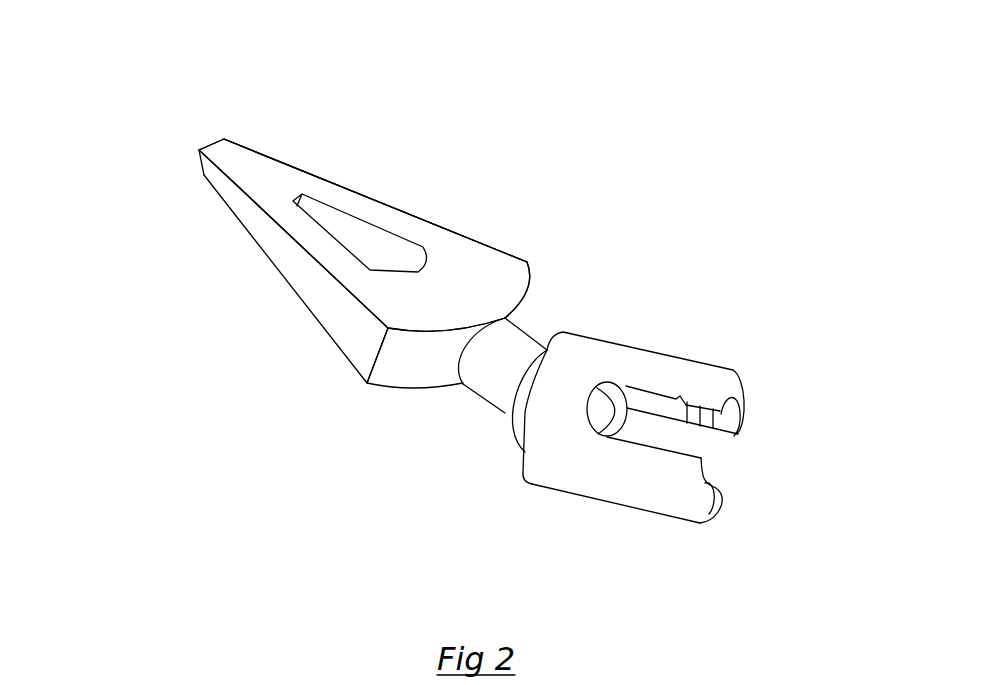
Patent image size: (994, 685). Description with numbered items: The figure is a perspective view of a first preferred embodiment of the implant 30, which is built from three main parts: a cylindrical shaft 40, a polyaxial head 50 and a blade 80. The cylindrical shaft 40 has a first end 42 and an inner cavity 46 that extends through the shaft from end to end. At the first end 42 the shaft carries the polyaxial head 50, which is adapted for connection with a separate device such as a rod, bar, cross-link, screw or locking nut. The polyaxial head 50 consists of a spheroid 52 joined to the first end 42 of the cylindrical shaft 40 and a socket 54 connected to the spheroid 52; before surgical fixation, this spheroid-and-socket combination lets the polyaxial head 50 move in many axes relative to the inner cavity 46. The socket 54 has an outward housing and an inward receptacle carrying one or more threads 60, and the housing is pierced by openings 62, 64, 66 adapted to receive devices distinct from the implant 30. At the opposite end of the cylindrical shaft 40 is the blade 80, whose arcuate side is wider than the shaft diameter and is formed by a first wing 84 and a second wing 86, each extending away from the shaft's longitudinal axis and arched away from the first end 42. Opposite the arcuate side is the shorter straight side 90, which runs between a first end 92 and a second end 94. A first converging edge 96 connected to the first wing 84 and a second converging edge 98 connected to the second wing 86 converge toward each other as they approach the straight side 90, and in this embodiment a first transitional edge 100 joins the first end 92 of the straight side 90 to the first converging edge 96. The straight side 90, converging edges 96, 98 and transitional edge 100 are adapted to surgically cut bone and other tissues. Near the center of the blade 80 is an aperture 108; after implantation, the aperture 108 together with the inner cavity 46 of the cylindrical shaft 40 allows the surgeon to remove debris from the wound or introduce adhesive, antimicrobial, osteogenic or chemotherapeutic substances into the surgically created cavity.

The implant 30 is at (465, 173).
The blade 80 is at (364, 199).
The second converging edge 98 is at (375, 188).
The second end 94 is at (166, 90).
The straight side 90 is at (131, 128).
The first end 92 is at (141, 183).
The first transitional edge 100 is at (138, 202).
The first converging edge 96 is at (269, 285).
The aperture 108 is at (394, 158).
The second wing 86 is at (489, 265).
The first wing 84 is at (415, 408).
The cylindrical shaft 40 is at (605, 300).
The polyaxial head 50 is at (643, 479).
The socket 54 is at (574, 519).
The spheroid 52 is at (671, 320).
The opening 64 is at (560, 491).
The inner cavity 46 is at (713, 329).
The threads 60 is at (784, 401).
The first end 42 is at (753, 424).
The opening 66 is at (743, 480).
The opening 62 is at (790, 514).